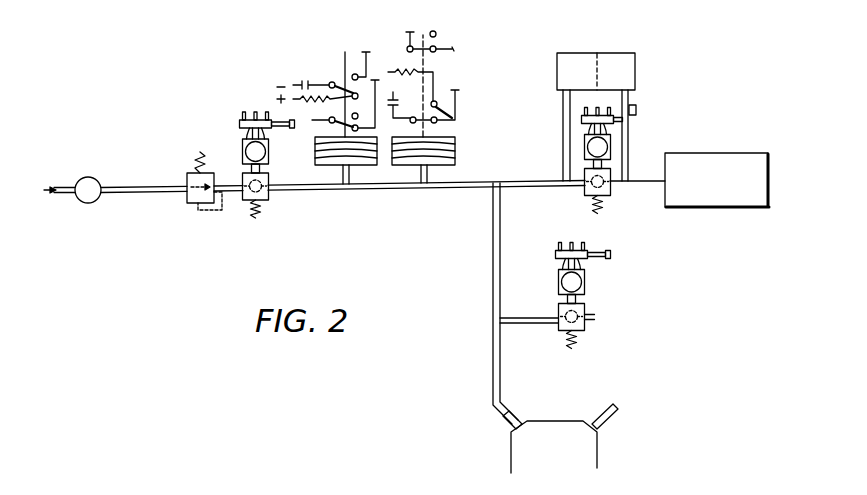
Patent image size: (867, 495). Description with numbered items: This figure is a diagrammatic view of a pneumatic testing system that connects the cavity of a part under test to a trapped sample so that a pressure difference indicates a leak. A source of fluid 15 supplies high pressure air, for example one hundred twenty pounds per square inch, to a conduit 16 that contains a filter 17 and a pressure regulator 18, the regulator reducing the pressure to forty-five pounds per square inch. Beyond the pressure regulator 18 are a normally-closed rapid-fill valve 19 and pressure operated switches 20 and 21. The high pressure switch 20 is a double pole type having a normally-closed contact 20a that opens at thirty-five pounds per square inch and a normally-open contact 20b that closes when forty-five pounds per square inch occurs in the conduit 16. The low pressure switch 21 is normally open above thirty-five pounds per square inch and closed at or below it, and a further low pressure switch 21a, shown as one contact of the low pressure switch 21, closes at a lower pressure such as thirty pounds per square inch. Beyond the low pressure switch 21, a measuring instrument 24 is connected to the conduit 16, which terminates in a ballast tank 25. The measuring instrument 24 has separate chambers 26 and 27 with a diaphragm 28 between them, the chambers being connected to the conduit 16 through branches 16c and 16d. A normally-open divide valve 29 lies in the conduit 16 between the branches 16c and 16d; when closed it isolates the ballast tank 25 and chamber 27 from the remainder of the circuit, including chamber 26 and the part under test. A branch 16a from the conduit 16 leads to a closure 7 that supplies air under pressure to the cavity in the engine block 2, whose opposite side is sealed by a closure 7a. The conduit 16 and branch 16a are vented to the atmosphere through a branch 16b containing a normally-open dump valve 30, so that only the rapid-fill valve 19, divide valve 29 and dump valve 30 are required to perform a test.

The engine block 2 is at (597, 455).
The closure 7 is at (505, 426).
The closure 7a is at (608, 418).
The source of fluid 15 is at (66, 187).
The conduit 16 is at (140, 187).
The branch 16a is at (493, 378).
The branch 16b is at (524, 318).
The branch 16c is at (563, 160).
The branch 16d is at (628, 156).
The filter 17 is at (90, 177).
The pressure regulator 18 is at (190, 203).
The rapid-fill valve 19 is at (270, 200).
The high pressure switch 20 is at (290, 72).
The normally-closed contact 20a is at (330, 122).
The normally-open contact 20b is at (345, 52).
The low pressure switch 21 is at (464, 86).
The low pressure switch 21a is at (432, 40).
The measuring instrument 24 is at (650, 97).
The ballast tank 25 is at (740, 153).
The chamber 26 is at (565, 53).
The chamber 27 is at (625, 53).
The diaphragm 28 is at (597, 53).
The divide valve 29 is at (585, 194).
The dump valve 30 is at (586, 328).